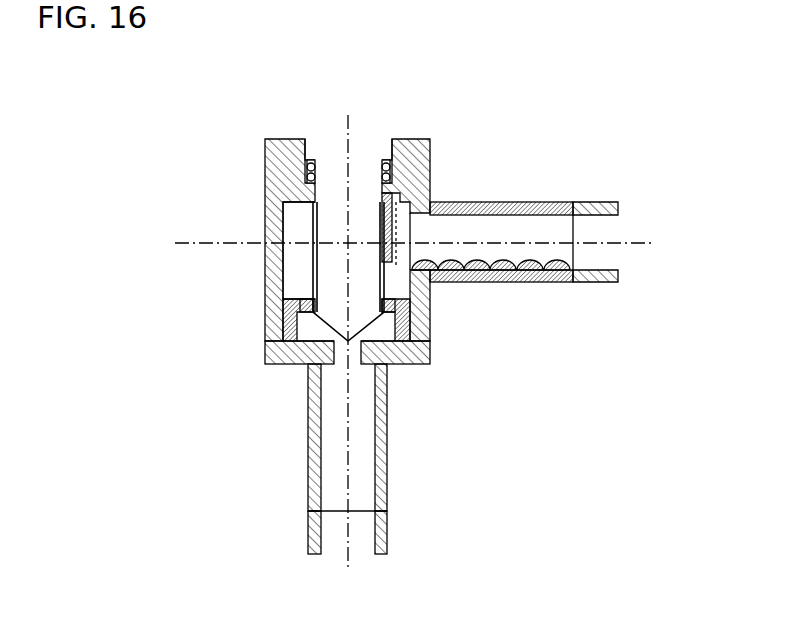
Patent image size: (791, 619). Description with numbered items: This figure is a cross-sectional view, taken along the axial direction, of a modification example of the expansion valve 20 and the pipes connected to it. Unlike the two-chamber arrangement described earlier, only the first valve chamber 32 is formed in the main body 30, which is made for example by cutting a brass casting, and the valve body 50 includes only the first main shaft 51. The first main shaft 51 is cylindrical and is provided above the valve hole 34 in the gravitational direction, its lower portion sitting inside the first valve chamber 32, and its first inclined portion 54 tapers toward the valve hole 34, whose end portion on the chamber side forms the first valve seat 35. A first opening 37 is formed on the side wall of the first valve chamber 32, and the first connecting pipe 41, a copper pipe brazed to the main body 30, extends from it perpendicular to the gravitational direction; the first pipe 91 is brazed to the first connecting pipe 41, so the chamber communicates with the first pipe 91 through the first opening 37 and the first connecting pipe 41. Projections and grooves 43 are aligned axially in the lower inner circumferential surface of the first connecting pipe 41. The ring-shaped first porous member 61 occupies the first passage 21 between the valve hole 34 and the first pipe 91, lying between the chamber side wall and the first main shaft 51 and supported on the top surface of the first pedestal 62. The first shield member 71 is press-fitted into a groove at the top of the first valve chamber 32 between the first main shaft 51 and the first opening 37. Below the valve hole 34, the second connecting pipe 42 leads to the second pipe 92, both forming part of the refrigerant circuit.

The expansion valve 20 is at (257, 123).
The main body 30 is at (417, 138).
The first valve chamber 32 is at (297, 228).
The valve hole 34 is at (421, 343).
The first valve seat 35 is at (428, 328).
The first opening 37 is at (394, 214).
The first connecting pipe 41 is at (497, 202).
The second connecting pipe 42 is at (387, 445).
The projections and grooves 43 is at (557, 274).
The first passage 21 is at (505, 260).
The valve body 50 is at (372, 153).
The first main shaft 51 is at (338, 185).
The first inclined portion 54 is at (305, 323).
The first porous member 61 is at (282, 297).
The first pedestal 62 is at (287, 338).
The first shield member 71 is at (400, 180).
The first pipe 91 is at (602, 202).
The second pipe 92 is at (380, 543).